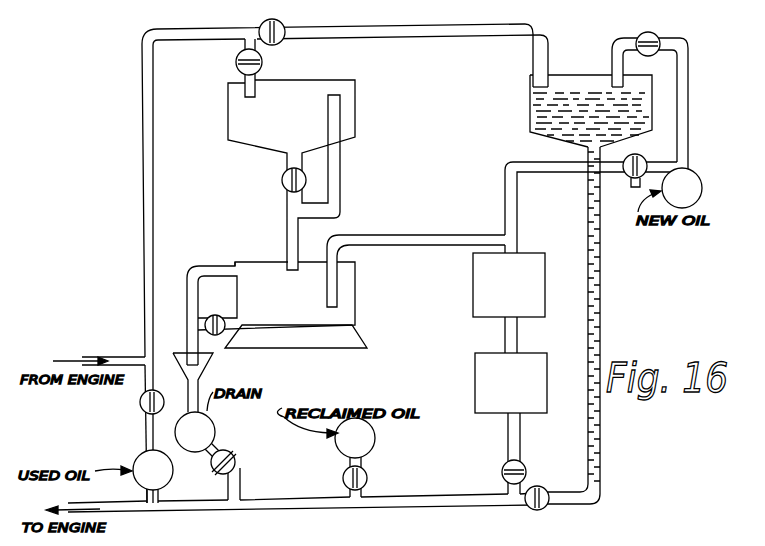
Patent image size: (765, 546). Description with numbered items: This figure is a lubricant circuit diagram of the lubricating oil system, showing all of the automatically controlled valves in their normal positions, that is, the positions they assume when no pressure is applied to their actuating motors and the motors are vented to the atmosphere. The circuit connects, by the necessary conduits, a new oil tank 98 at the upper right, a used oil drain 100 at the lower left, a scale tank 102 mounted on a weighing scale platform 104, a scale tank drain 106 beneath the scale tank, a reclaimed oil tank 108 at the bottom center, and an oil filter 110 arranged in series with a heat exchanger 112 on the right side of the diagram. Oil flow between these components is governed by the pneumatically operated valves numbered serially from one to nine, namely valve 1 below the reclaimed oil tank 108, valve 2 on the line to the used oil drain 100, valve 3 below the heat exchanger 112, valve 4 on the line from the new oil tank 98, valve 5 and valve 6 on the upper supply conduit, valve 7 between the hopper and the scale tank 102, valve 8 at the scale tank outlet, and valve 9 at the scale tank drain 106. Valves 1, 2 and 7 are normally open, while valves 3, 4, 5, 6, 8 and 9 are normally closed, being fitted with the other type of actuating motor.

The valve 1 is at (367, 479).
The valve 2 is at (140, 402).
The valve 3 is at (524, 466).
The valve 4 is at (546, 507).
The valve 5 is at (282, 44).
The valve 6 is at (236, 65).
The valve 7 is at (282, 180).
The valve 8 is at (215, 315).
The valve 9 is at (235, 464).
The new oil tank 98 is at (531, 96).
The used oil drain 100 is at (143, 457).
The scale tank 102 is at (262, 262).
The weighing scale platform 104 is at (335, 341).
The scale tank drain 106 is at (207, 413).
The reclaimed oil tank 108 is at (365, 436).
The oil filter 110 is at (480, 300).
The heat exchanger 112 is at (480, 360).